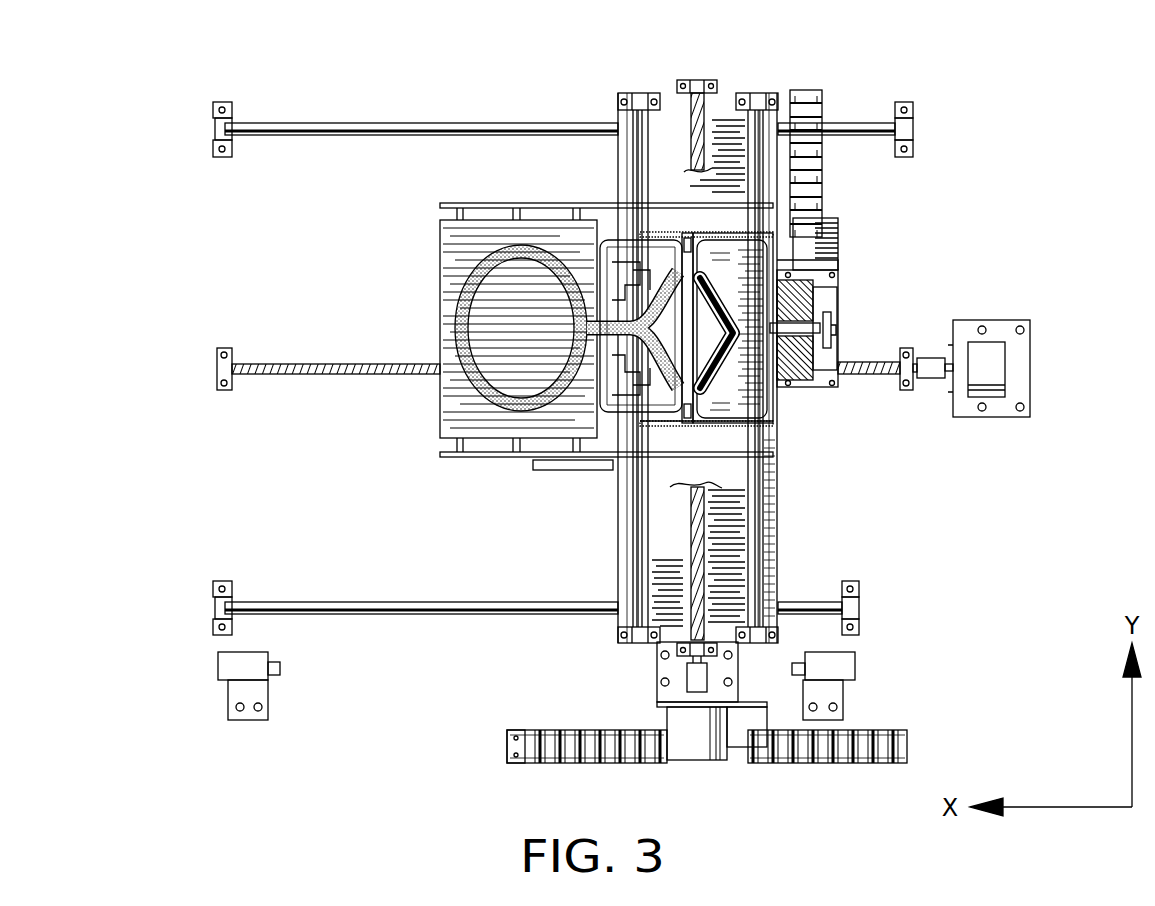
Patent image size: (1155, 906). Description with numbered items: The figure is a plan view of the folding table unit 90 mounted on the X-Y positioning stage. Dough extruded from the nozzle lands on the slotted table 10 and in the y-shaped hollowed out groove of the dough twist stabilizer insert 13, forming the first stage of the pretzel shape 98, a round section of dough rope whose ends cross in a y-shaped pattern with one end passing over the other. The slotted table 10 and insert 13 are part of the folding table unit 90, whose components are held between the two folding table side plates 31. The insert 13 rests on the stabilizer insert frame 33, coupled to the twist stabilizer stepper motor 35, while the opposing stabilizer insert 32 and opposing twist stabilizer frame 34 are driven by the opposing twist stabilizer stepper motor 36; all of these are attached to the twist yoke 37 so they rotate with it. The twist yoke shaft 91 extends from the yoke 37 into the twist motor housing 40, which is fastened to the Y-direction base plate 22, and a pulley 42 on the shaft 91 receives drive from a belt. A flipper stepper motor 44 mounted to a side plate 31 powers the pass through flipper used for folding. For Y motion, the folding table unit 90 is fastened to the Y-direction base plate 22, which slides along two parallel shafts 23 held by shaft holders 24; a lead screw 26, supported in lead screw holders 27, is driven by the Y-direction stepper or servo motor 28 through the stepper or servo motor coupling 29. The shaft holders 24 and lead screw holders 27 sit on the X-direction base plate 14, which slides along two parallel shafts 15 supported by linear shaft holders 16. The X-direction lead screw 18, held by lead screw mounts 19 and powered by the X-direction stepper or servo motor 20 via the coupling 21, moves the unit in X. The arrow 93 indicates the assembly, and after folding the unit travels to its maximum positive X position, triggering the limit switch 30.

The slotted table 10 is at (440, 420).
The dough twist stabilizer insert 13 is at (615, 262).
The X-direction base plate 14 is at (672, 108).
The parallel shafts 15 is at (290, 124).
The linear shaft holders 16 is at (224, 128).
The X-direction lead screw 18 is at (865, 364).
The lead screw mounts 19 is at (224, 366).
The X-direction stepper or servo motor 20 is at (985, 360).
The X-direction stepper or servo motor coupling 21 is at (935, 378).
The Y-direction base plate 22 is at (815, 256).
The parallel shafts 23 is at (765, 512).
The shaft holders 24 is at (640, 101).
The lead screw 26 is at (700, 573).
The lead screw holders 27 is at (698, 92).
The Y-direction stepper or servo motor 28 is at (680, 750).
The stepper or servo motor coupling 29 is at (688, 682).
The limit switch 30 is at (235, 668).
The folding table side plates 31 is at (440, 205).
The opposing stabilizer insert 32 is at (780, 410).
The stabilizer insert frame 33 is at (622, 242).
The opposing twist stabilizer frame 34 is at (757, 443).
The twist stabilizer stepper motor 35 is at (668, 231).
The opposing twist stabilizer stepper motor 36 is at (665, 430).
The twist yoke 37 is at (818, 242).
The twist motor housing 40 is at (802, 372).
The pulley 42 is at (818, 323).
The flipper stepper motor 44 is at (563, 468).
The folding table unit 90 is at (405, 296).
The twist yoke shaft 91 is at (808, 262).
The assembly arrow 93 is at (486, 634).
The first stage of the pretzel shape 98 is at (452, 344).